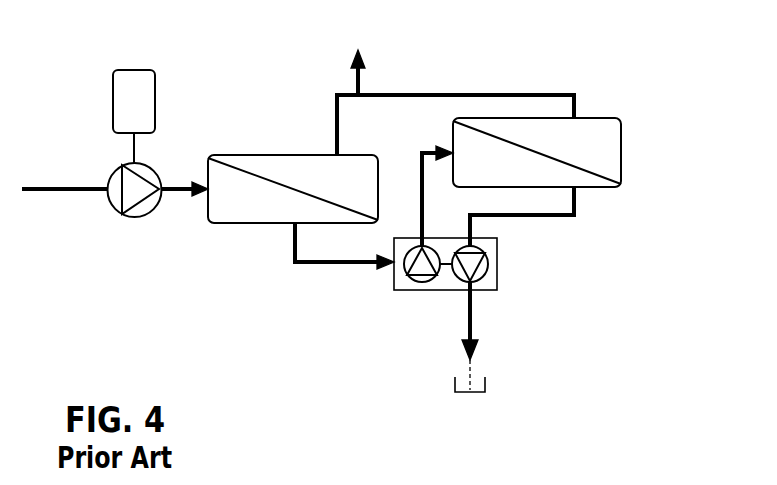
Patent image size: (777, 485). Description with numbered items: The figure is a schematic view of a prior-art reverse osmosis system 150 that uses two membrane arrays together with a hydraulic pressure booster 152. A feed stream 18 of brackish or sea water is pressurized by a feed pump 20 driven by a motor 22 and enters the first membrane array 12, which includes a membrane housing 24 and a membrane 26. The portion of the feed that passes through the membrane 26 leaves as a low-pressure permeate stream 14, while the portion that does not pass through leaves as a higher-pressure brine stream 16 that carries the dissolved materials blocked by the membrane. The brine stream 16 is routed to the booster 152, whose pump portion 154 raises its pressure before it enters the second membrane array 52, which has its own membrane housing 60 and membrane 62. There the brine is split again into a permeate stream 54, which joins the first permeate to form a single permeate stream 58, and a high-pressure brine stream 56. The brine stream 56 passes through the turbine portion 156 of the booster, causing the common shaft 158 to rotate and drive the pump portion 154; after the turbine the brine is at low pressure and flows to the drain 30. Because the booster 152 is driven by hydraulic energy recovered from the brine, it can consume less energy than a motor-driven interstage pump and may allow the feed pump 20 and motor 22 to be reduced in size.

The membrane array 12 is at (258, 141).
The permeate stream 14 is at (340, 93).
The brine stream 16 is at (327, 262).
The feed stream 18 is at (180, 183).
The feed pump 20 is at (117, 208).
The motor 22 is at (134, 70).
The membrane housing 24 is at (237, 223).
The membrane 26 is at (288, 185).
The drain 30 is at (485, 382).
The membrane array 52 is at (606, 105).
The permeate stream 54 is at (553, 92).
The brine stream 56 is at (577, 200).
The single permeate stream 58 is at (362, 83).
The membrane housing 60 is at (622, 128).
The membrane 62 is at (572, 162).
The reverse osmosis system 150 is at (665, 48).
The hydraulic pressure booster 152 is at (509, 234).
The pump portion 154 is at (420, 283).
The turbine portion 156 is at (490, 263).
The common shaft 158 is at (447, 264).